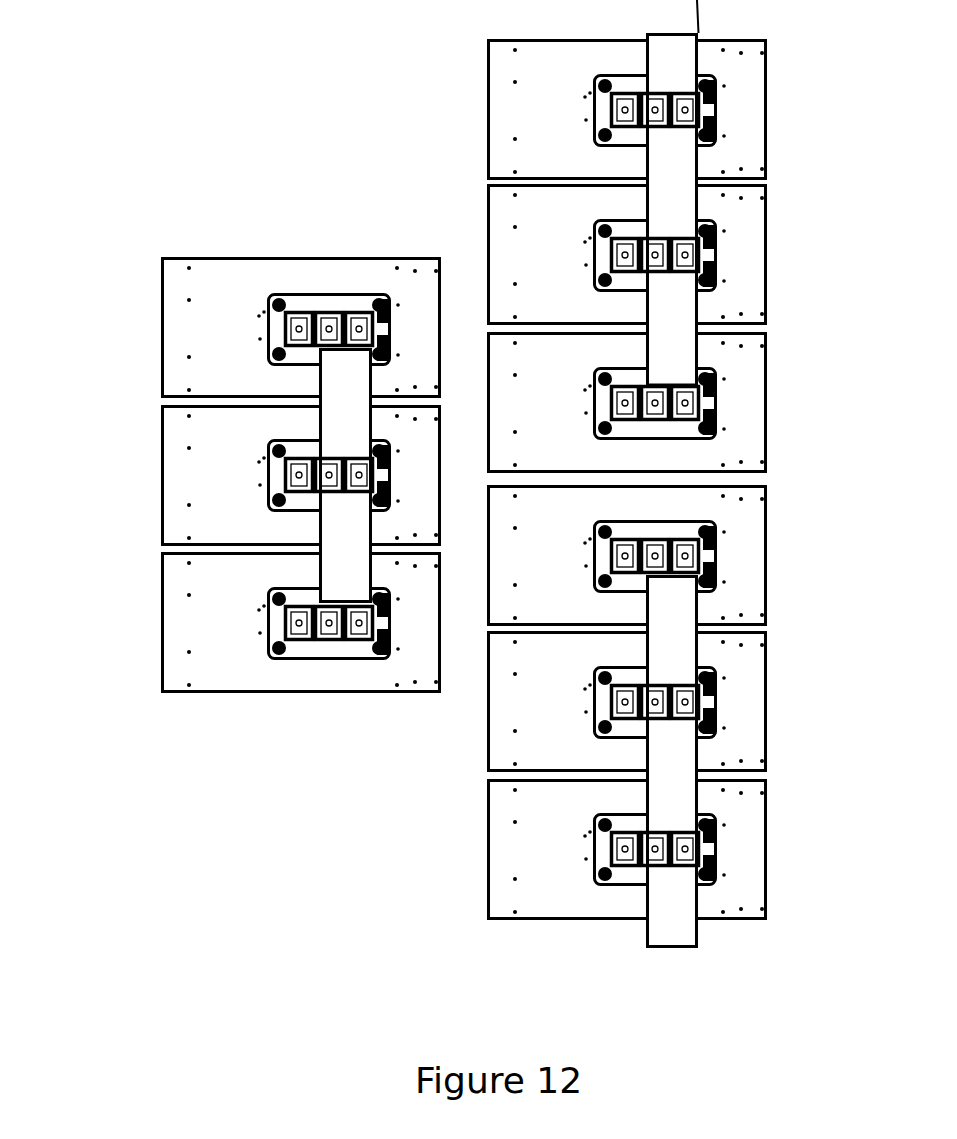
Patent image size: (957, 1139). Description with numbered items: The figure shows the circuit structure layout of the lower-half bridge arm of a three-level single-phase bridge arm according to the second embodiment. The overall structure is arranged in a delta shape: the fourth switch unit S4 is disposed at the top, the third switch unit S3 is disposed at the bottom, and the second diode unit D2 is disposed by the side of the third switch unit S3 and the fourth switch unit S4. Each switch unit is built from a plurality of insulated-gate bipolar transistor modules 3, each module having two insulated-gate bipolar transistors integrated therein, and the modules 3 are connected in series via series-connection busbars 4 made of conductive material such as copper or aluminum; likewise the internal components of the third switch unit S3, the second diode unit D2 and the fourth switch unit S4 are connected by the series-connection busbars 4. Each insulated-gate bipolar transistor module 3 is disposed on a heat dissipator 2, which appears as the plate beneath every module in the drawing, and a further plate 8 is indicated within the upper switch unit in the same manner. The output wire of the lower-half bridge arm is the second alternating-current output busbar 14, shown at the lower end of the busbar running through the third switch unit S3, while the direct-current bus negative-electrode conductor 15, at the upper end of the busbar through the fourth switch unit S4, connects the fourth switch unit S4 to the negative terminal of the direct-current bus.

The heat dissipator 2 is at (192, 650).
The insulated-gate bipolar transistor module 3 is at (603, 702).
The series-connection busbar 4 is at (663, 758).
The heat sink plate of switch stack 8 is at (523, 230).
The second alternating-current output busbar 14 is at (663, 887).
The direct-current bus negative-electrode conductor 15 is at (664, 51).
The second diode unit D2 is at (140, 259).
The fourth switch unit S4 is at (782, 42).
The third switch unit S3 is at (782, 488).